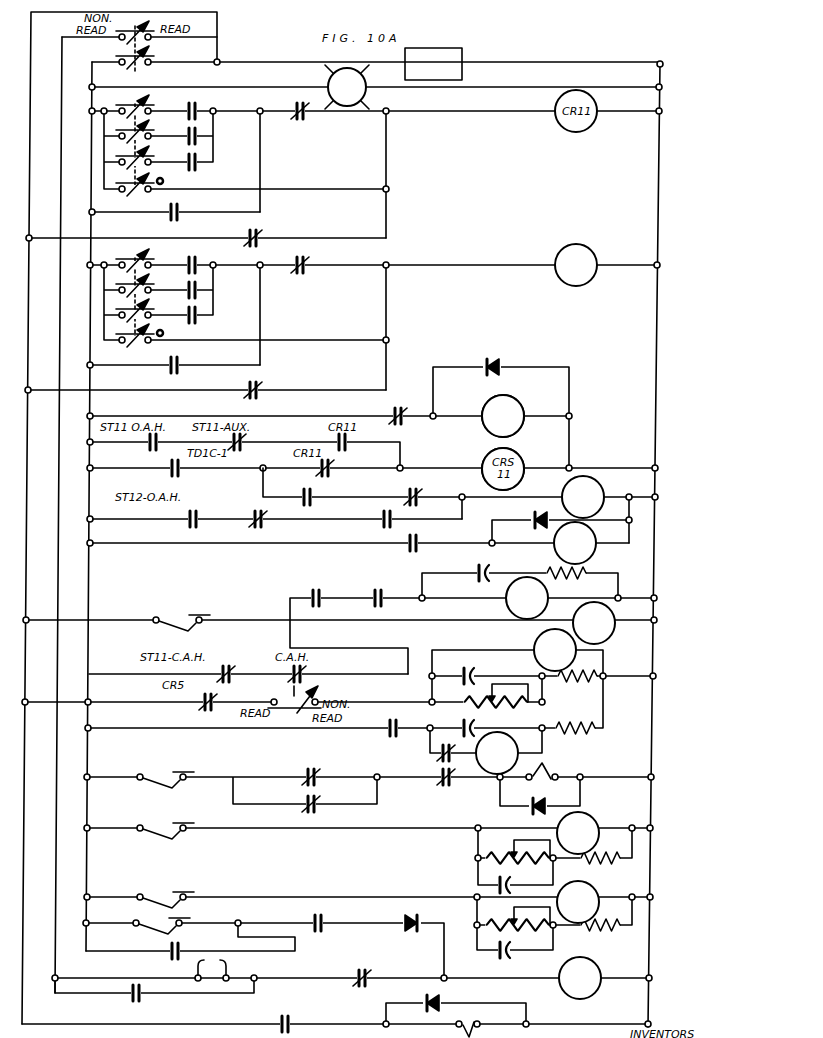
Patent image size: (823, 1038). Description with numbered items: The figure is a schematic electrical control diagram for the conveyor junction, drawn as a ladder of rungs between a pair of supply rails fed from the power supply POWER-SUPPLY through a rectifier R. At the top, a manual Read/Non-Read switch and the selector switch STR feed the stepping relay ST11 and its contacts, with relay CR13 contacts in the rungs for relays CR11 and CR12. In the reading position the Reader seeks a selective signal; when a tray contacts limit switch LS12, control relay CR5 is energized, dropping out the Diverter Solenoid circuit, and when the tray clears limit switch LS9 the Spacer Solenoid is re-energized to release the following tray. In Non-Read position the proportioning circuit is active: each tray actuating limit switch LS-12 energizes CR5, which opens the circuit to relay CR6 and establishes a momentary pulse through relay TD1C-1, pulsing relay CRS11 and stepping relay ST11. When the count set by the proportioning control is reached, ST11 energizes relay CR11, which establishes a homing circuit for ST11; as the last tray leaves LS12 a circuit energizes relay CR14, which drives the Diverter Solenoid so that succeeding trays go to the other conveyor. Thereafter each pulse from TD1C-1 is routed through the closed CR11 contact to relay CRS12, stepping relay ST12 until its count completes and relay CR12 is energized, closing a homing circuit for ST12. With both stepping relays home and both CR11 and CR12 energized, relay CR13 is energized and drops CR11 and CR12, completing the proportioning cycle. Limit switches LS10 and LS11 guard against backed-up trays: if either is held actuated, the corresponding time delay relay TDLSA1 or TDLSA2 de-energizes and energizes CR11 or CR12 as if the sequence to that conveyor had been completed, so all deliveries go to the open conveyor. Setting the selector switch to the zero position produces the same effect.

The rectifier R is at (347, 87).
The stepping relay ST11 is at (374, 265).
The selector switch STR is at (372, 318).
The relay CR11 is at (174, 209).
The relay CR12 is at (373, 309).
The relay CR13 is at (297, 118).
The relay CR14 is at (337, 994).
The control relay CR5 is at (594, 623).
The relay CR6 is at (370, 696).
The relay CRS11 is at (329, 423).
The relay CRS12 is at (444, 505).
The stepping relay ST12 is at (358, 543).
The relay TDLSA1 is at (206, 235).
The relay TDLSA2 is at (205, 387).
The relay TD1C-1 is at (497, 753).
The limit switch LS9 is at (369, 783).
The limit switch LS10 is at (368, 851).
The limit switch LS11 is at (368, 920).
The limit switch LS12 is at (263, 940).
The limit switch LS-12 is at (340, 615).
The power supply POWER-SUPPLY is at (433, 64).